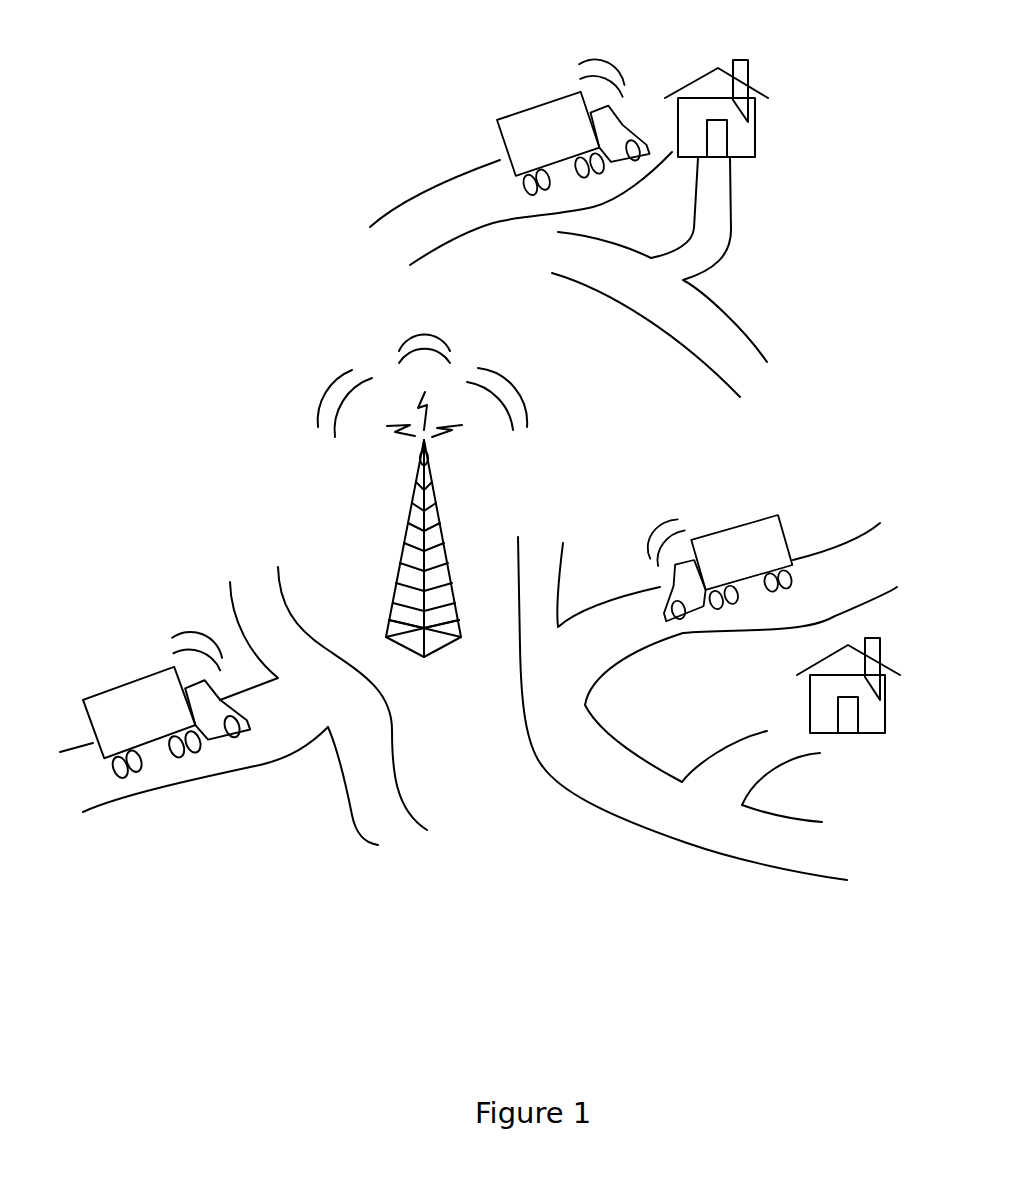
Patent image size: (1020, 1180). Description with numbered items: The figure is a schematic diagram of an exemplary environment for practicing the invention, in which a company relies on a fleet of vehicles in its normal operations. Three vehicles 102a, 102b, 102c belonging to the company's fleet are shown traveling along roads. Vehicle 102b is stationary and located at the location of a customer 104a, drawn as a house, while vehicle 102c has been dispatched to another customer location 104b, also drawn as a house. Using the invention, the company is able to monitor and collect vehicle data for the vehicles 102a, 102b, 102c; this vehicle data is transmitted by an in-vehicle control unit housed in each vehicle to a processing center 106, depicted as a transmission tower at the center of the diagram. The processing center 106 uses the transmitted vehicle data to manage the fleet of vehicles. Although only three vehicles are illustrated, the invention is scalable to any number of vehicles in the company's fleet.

The vehicle 102a is at (108, 680).
The vehicle 102b is at (522, 110).
The vehicle 102c is at (767, 505).
The customer location 104a is at (783, 68).
The customer location 104b is at (898, 652).
The processing center 106 is at (448, 517).